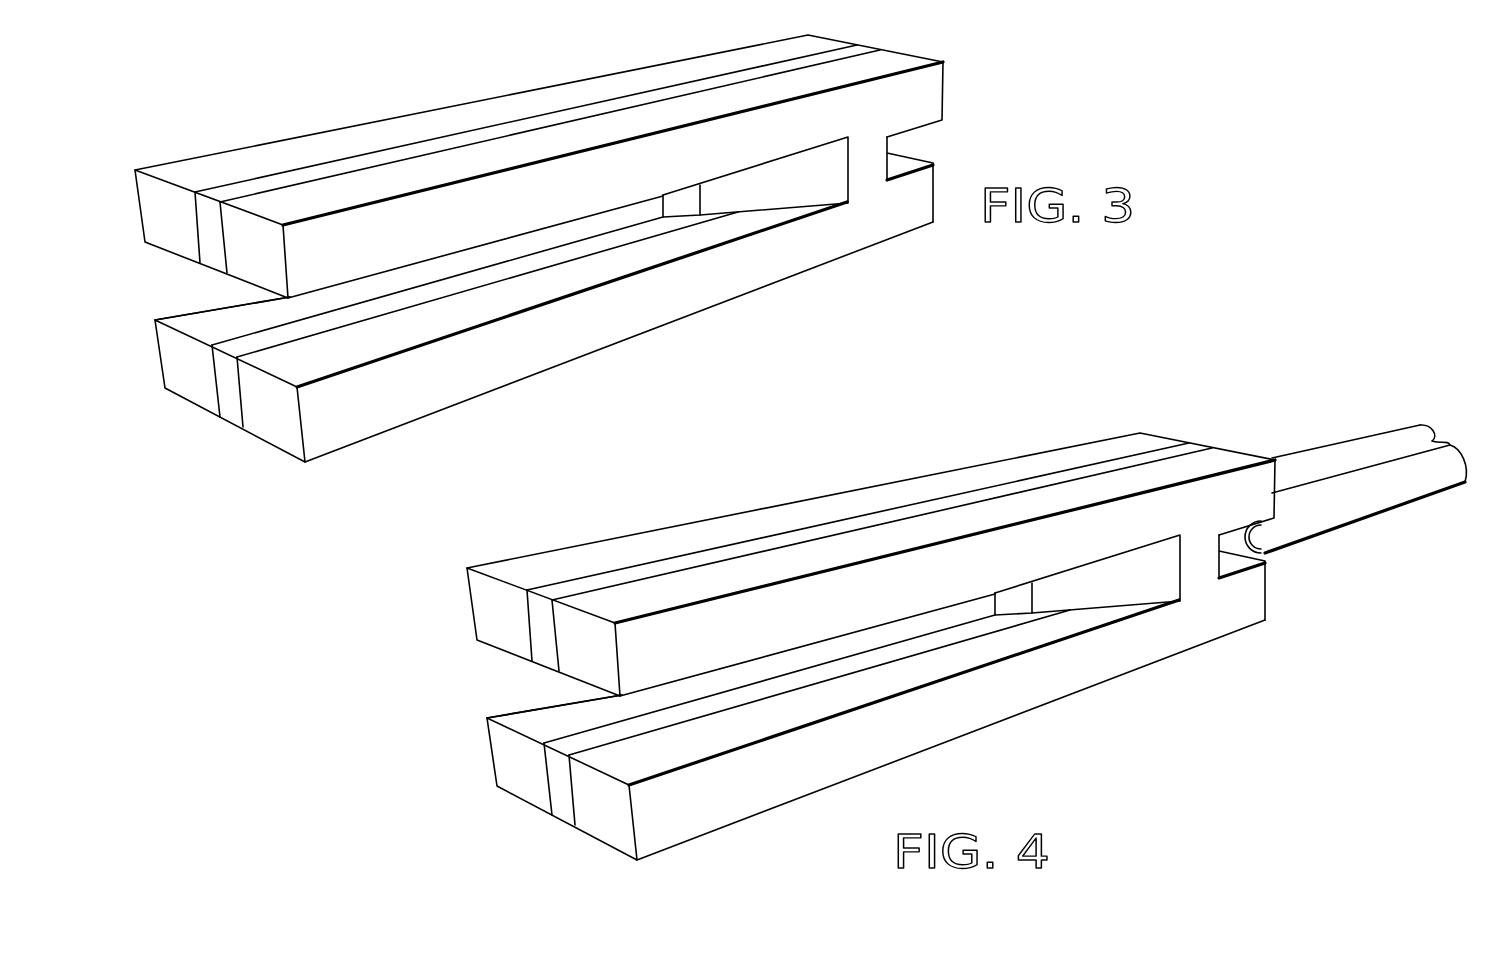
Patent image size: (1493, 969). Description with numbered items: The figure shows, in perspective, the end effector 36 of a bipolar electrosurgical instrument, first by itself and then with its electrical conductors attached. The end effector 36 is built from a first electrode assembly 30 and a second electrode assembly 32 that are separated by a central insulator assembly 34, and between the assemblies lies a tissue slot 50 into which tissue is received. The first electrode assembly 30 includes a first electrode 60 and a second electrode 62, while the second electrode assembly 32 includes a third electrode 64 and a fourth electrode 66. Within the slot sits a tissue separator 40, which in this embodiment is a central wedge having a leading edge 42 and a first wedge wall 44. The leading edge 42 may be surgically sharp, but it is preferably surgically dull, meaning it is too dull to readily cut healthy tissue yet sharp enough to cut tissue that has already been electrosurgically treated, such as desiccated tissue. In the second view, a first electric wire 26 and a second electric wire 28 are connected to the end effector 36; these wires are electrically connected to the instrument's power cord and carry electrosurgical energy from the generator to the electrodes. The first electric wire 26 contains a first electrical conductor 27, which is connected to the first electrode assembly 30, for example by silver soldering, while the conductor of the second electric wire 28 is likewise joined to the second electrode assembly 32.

In FIG. 4, the first electric wire 26 is at (1365, 467).
In FIG. 4, the first electrical conductor 27 is at (1244, 535).
In FIG. 4, the second electric wire 28 is at (1358, 443).
In FIG. 3, the first electrode assembly 30 is at (555, 245).
In FIG. 4, the first electrode assembly 30 is at (900, 631).
In FIG. 3, the second electrode assembly 32 is at (668, 73).
In FIG. 4, the second electrode assembly 32 is at (858, 508).
In FIG. 3, the central insulator assembly 34 is at (857, 52).
In FIG. 4, the central insulator assembly 34 is at (1190, 443).
In FIG. 3, the end effector 36 is at (558, 245).
In FIG. 4, the end effector 36 is at (966, 618).
In FIG. 3, the tissue separator 40 is at (709, 215).
In FIG. 4, the tissue separator 40 is at (1041, 613).
In FIG. 3, the leading edge 42 is at (660, 204).
In FIG. 4, the leading edge 42 is at (967, 589).
In FIG. 3, the first wedge wall 44 is at (748, 187).
In FIG. 4, the first wedge wall 44 is at (1087, 574).
In FIG. 3, the tissue slot 50 is at (262, 309).
In FIG. 4, the tissue slot 50 is at (554, 698).
In FIG. 3, the first electrode 60 is at (346, 260).
In FIG. 3, the second electrode 62 is at (361, 419).
In FIG. 3, the third electrode 64 is at (185, 229).
In FIG. 3, the fourth electrode 66 is at (203, 379).